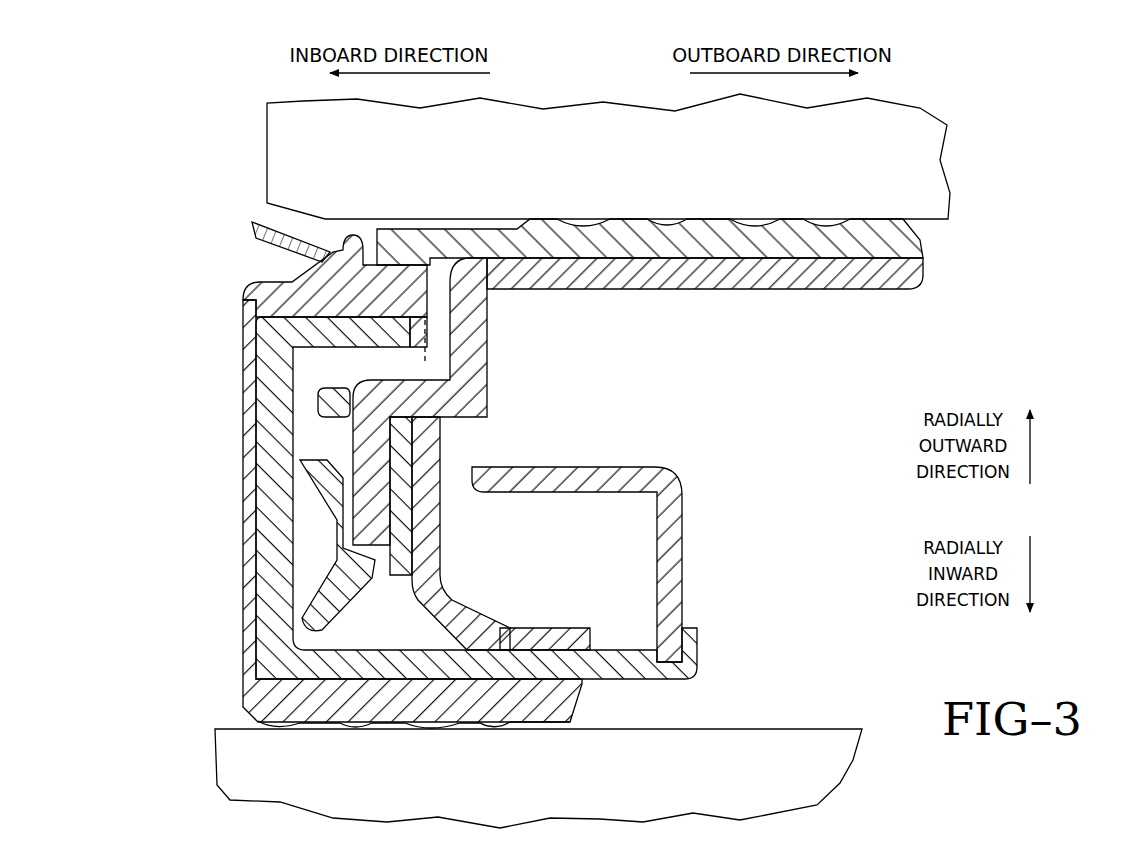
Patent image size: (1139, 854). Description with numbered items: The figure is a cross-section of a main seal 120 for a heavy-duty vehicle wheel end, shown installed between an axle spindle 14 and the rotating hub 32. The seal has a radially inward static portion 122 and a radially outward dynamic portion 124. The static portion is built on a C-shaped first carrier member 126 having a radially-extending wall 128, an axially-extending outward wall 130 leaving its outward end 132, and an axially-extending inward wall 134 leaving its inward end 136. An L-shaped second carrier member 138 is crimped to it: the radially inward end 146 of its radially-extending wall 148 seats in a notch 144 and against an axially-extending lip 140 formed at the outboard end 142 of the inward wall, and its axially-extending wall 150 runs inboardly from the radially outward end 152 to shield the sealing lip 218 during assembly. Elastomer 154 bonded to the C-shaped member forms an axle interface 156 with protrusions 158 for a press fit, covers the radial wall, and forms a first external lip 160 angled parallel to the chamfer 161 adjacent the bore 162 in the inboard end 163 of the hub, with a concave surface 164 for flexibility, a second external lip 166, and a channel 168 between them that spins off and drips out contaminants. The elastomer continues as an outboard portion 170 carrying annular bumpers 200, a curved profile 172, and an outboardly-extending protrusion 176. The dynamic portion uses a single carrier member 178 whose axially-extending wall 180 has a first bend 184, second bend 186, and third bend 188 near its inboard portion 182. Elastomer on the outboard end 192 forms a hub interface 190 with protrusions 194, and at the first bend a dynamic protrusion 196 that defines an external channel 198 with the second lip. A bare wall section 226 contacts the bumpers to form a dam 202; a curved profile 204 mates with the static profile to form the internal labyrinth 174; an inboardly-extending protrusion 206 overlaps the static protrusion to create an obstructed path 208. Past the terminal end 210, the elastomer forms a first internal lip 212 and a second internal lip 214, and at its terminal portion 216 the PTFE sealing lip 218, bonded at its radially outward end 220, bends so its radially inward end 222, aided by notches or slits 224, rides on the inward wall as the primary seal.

The axle spindle 14 is at (560, 797).
The hub 32 is at (592, 163).
The main seal 120 is at (774, 461).
The static portion 122 is at (240, 528).
The dynamic portion 124 is at (722, 293).
The first carrier member 126 is at (330, 560).
The radially-extending wall 128 is at (278, 524).
The axially-extending outward wall 130 is at (363, 333).
The outward end 132 is at (332, 370).
The axially-extending inward wall 134 is at (447, 663).
The inward end 136 is at (275, 640).
The second carrier member 138 is at (692, 549).
The axially-extending lip 140 is at (685, 640).
The outboard end 142 is at (633, 672).
The notch 144 is at (675, 653).
The radially inward end 146 is at (663, 635).
The radially-extending wall 148 is at (673, 580).
The axially-extending wall 150 is at (597, 473).
The radially outward end 152 is at (672, 518).
The elastomer 154 is at (432, 247).
The axle interface 156 is at (412, 723).
The protrusions 158 is at (297, 726).
The first external lip 160 is at (267, 243).
The chamfer 161 is at (272, 210).
The bore 162 is at (318, 229).
The inboard end 163 is at (266, 160).
The concave surface 164 is at (295, 270).
The second external lip 166 is at (352, 248).
The channel 168 is at (338, 250).
The outboard portion 170 is at (417, 320).
The curved profile 172 is at (395, 402).
The internal labyrinth 174 is at (362, 407).
The axially outboardly-extending protrusion 176 is at (362, 412).
The carrier member 178 is at (688, 258).
The axially-extending wall 180 is at (807, 277).
The inboard portion 182 is at (504, 242).
The first bend 184 is at (487, 297).
The second bend 186 is at (457, 402).
The third bend 188 is at (407, 427).
The hub interface 190 is at (810, 225).
The outboard end 192 is at (885, 277).
The protrusions 194 is at (843, 225).
The dynamic protrusion 196 is at (403, 250).
The external channel 198 is at (375, 258).
The bumpers 200 is at (437, 340).
The dam 202 is at (450, 357).
The curved profile 204 is at (403, 382).
The axially inboardly-extending protrusion 206 is at (327, 413).
The obstructed path 208 is at (332, 437).
The terminal end 210 is at (365, 540).
The first internal lip 212 is at (328, 468).
The second internal lip 214 is at (323, 605).
The terminal portion 216 is at (410, 458).
The sealing lip 218 is at (452, 636).
The radially outward end 220 is at (425, 475).
The radially inward end 222 is at (552, 638).
The notches or slits 224 is at (527, 650).
The wall section 226 is at (437, 322).